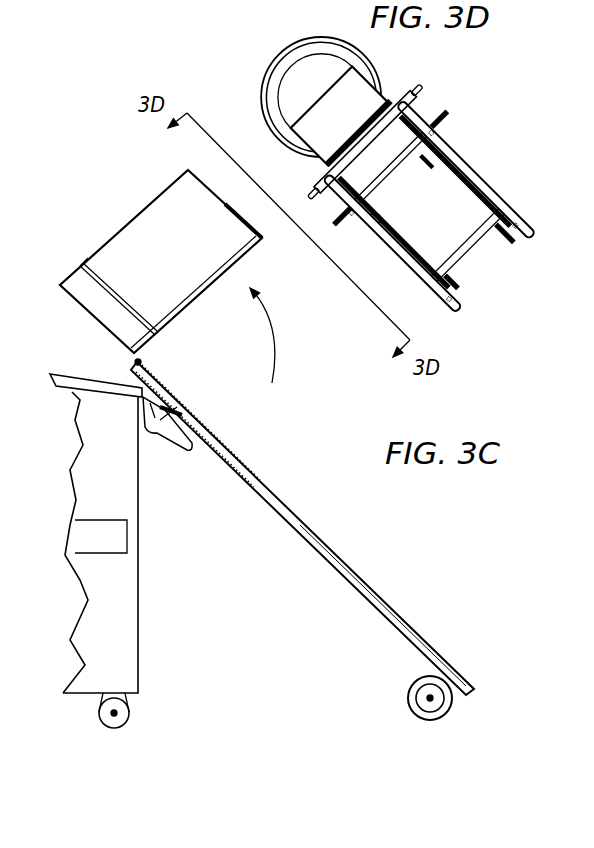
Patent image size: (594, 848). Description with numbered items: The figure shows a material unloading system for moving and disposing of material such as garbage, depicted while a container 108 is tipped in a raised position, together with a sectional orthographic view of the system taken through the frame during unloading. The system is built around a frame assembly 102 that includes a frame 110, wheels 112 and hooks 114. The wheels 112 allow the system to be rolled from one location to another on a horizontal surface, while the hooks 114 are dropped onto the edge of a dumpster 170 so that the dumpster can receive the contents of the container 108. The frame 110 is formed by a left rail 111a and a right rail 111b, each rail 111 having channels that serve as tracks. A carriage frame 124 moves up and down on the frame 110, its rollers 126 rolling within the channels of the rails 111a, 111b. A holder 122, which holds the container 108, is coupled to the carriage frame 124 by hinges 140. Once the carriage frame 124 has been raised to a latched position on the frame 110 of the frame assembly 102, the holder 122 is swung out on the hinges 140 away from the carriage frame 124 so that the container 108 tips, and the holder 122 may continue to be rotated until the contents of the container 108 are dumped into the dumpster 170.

In FIG. 3C, the frame assembly 102 is at (402, 591).
In FIG. 3D, the container 108 is at (319, 95).
In FIG. 3C, the container 108 is at (161, 261).
In FIG. 3D, the frame 110 is at (483, 182).
In FIG. 3C, the frame 110 is at (320, 508).
In FIG. 3C, the rail 111 is at (343, 558).
In FIG. 3D, the left rail 111a is at (417, 268).
In FIG. 3D, the right rail 111b is at (504, 207).
In FIG. 3C, the wheels 112 is at (407, 698).
In FIG. 3C, the hooks 114 is at (130, 382).
In FIG. 3C, the holder 122 is at (227, 287).
In FIG. 3D, the carriage frame 124 is at (456, 160).
In FIG. 3C, the carriage frame 124 is at (230, 473).
In FIG. 3D, the rollers 126 is at (374, 222).
In FIG. 3D, the hinges 140 is at (412, 100).
In FIG. 3C, the hinges 140 is at (142, 363).
In FIG. 3C, the dumpster 170 is at (100, 560).